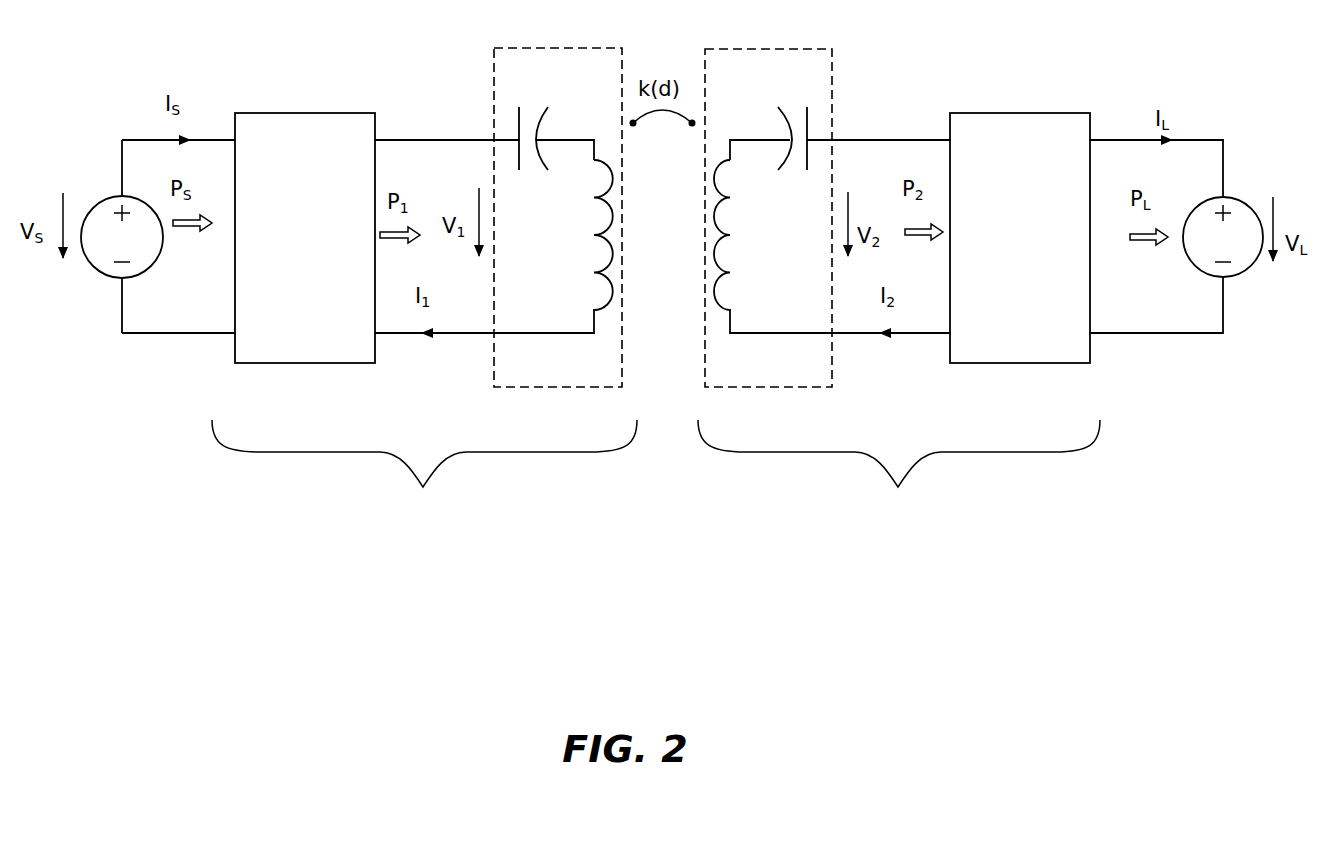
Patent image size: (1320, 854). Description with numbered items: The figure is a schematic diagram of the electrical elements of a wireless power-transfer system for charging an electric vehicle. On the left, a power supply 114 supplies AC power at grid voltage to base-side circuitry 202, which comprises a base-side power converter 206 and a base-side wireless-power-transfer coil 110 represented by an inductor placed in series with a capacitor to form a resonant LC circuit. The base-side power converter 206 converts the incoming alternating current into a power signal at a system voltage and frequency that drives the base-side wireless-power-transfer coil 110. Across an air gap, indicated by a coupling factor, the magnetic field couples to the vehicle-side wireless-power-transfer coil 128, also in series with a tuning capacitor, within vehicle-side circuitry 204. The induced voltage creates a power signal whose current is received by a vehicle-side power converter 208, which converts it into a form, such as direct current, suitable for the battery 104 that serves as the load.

The battery 104 is at (1237, 196).
The base-side wireless-power-transfer coil 110 is at (510, 48).
The power supply 114 is at (103, 197).
The vehicle-side wireless-power-transfer coil 128 is at (735, 49).
The base-side circuitry 202 is at (424, 474).
The vehicle-side circuitry 204 is at (899, 472).
The base-side power converter 206 is at (303, 113).
The vehicle-side power converter 208 is at (968, 113).